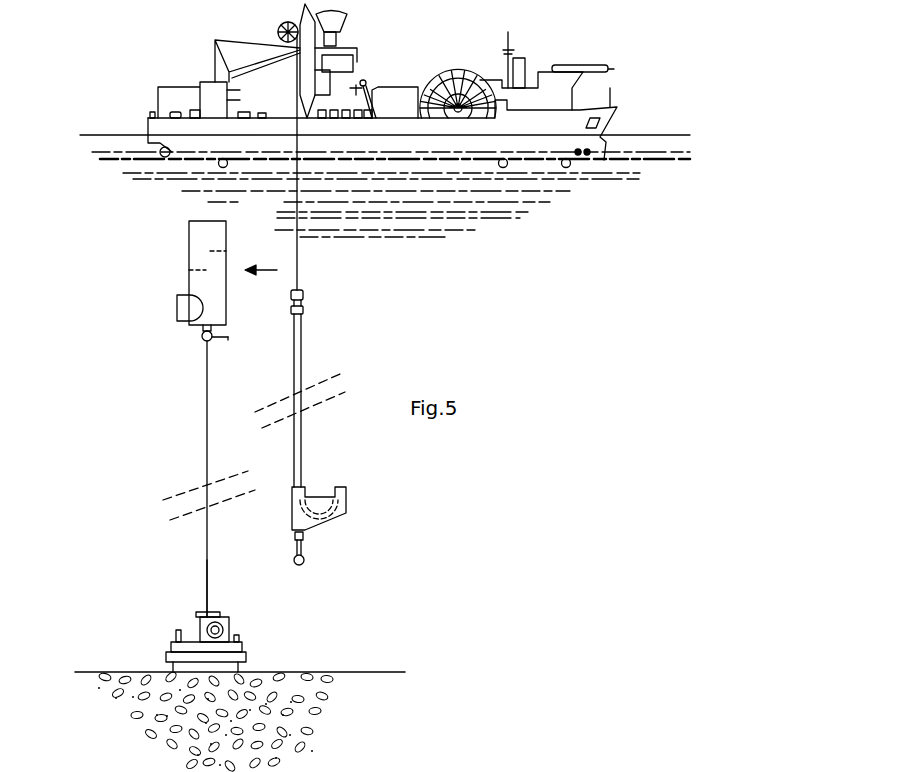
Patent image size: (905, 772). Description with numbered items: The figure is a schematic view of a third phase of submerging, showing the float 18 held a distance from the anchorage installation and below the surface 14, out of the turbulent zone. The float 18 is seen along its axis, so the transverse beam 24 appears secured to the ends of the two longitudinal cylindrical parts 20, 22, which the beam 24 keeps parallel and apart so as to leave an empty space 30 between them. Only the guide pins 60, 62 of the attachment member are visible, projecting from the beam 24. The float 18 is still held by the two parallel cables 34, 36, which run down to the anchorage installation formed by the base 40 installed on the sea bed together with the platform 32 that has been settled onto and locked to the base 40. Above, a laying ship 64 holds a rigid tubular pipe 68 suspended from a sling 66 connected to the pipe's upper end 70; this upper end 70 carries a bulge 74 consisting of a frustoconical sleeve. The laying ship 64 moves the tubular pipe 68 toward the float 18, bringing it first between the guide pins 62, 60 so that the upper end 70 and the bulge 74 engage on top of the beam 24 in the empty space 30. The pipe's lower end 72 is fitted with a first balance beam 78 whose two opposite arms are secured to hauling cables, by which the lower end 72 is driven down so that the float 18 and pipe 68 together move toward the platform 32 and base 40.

The surface 14 is at (115, 135).
The float 18 is at (173, 293).
The longitudinal cylindrical part 20 is at (203, 256).
The longitudinal cylindrical part 22 is at (226, 252).
The transverse beam 24 is at (197, 335).
The empty space 30 is at (189, 268).
The platform 32 is at (243, 648).
The parallel cable 34 is at (208, 545).
The parallel cable 36 is at (208, 588).
The base 40 is at (175, 668).
The guide pin 60 is at (228, 337).
The guide pin 62 is at (220, 340).
The laying ship 64 is at (397, 125).
The sling 66 is at (300, 252).
The rigid tubular pipe 68 is at (302, 442).
The upper end 70 is at (303, 300).
The lower end 72 is at (297, 508).
The bulge 74 is at (305, 310).
The first balance beam 78 is at (308, 497).